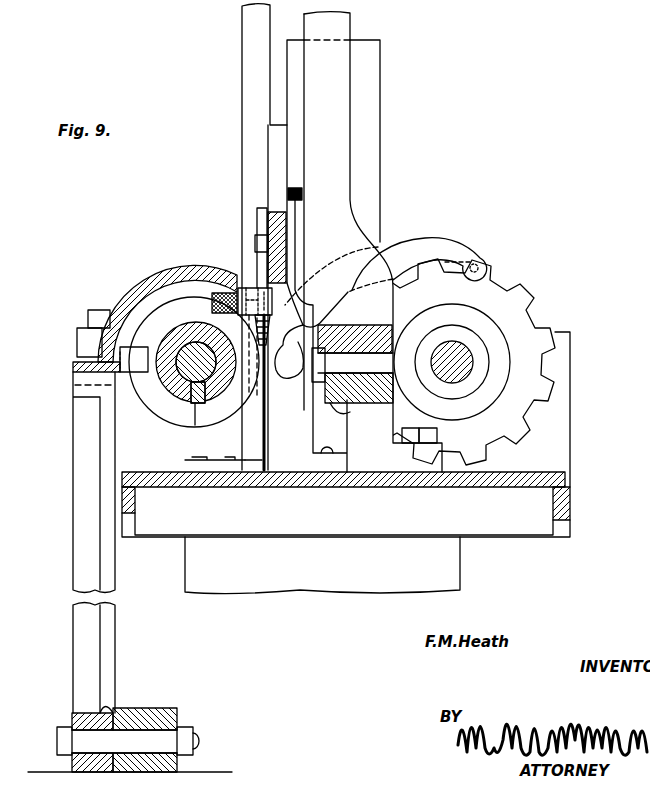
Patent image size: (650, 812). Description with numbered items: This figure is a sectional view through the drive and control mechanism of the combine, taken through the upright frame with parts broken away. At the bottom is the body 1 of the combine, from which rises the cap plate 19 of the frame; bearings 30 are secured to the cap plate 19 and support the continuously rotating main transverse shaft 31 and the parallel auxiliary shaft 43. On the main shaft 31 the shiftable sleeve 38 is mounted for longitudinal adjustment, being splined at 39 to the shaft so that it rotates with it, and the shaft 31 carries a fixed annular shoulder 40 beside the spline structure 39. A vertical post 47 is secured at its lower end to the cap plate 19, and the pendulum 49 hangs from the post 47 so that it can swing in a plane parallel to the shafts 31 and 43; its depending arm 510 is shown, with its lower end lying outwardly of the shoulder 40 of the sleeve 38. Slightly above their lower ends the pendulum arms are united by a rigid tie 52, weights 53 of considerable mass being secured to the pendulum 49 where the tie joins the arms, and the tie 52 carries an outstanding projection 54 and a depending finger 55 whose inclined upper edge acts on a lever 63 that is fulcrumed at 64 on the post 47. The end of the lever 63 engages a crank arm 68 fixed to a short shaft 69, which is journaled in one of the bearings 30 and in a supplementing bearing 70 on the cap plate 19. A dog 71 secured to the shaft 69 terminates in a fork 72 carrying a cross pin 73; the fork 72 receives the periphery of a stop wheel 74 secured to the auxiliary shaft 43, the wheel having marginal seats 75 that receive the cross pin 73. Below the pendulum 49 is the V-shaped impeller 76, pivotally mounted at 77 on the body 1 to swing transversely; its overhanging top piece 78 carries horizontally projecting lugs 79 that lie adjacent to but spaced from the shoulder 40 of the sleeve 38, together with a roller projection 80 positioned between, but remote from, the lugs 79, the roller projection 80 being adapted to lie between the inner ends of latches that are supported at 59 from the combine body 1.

The body 1 is at (226, 761).
The cap plate 19 is at (386, 478).
The bearings 30 is at (555, 453).
The main transverse shaft 31 is at (186, 366).
The shiftable sleeve 38 is at (195, 322).
The spline structure 39 is at (195, 425).
The annular shoulder 40 is at (173, 414).
The auxiliary shaft 43 is at (452, 362).
The vertical post 47 is at (337, 119).
The pendulum 49 is at (242, 30).
The pendulum arm 510 is at (252, 87).
The rigid tie 52 is at (268, 207).
The weights 53 is at (372, 75).
The outstanding projection 54 is at (257, 243).
The depending finger 55 is at (292, 228).
The latch support 59 is at (252, 457).
The lever 63 is at (347, 422).
The fulcrum 64 is at (357, 347).
The crank arm 68 is at (288, 343).
The short shaft 69 is at (310, 386).
The supplementing bearing 70 is at (288, 458).
The dog 71 is at (416, 246).
The fork 72 is at (486, 268).
The cross pin 73 is at (477, 258).
The stop wheel 74 is at (512, 310).
The marginal seats 75 is at (562, 384).
The V-shaped impeller 76 is at (74, 460).
The pivot 77 is at (62, 742).
The overhanging top piece 78 is at (162, 271).
The lugs 79 is at (140, 352).
The roller projection 80 is at (248, 288).